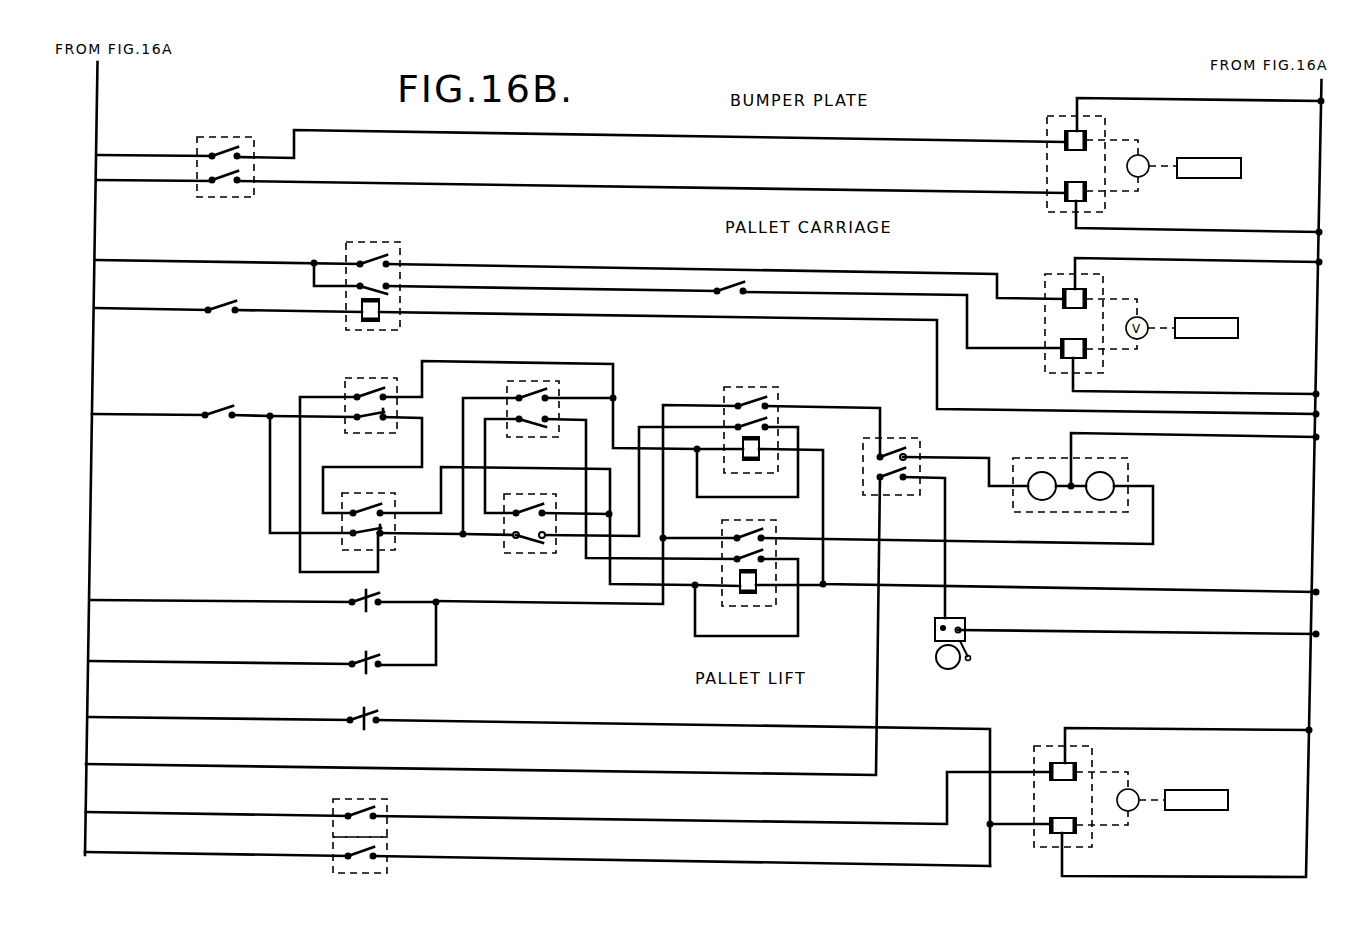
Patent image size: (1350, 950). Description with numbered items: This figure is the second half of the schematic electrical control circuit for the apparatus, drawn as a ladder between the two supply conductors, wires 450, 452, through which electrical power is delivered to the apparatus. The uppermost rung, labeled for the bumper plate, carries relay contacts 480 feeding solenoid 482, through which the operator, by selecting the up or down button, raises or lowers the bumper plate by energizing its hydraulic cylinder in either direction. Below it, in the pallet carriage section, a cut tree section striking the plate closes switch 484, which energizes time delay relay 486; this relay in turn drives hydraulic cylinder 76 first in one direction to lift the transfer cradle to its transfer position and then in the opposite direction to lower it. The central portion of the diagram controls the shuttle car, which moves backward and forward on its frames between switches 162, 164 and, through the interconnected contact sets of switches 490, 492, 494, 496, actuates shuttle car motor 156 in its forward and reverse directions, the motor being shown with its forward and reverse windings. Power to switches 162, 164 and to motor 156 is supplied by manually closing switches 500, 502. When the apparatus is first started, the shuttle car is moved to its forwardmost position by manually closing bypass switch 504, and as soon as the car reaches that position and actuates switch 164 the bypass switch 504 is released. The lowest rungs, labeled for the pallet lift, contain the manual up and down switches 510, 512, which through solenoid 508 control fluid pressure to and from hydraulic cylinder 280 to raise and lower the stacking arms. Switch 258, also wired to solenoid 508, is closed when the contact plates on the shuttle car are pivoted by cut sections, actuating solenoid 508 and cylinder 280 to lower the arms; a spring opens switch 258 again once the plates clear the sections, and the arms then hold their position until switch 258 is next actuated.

The wire 450 is at (97, 108).
The wire 452 is at (1318, 197).
The bumper plate relay contacts 480 is at (230, 137).
The solenoid 482 is at (1047, 124).
The hydraulic cylinder 76 is at (1207, 162).
The switch 484 is at (228, 306).
The time delay relay 486 is at (371, 242).
The switch 162 is at (371, 378).
The switch 164 is at (371, 493).
The switch 490 is at (507, 384).
The switch 492 is at (529, 553).
The switch 494 is at (751, 387).
The switch 496 is at (757, 606).
The switch 500 is at (226, 408).
The switch 502 is at (265, 627).
The bypass switch 504 is at (235, 673).
The switch 258 is at (539, 787).
The up switch 510 is at (333, 800).
The down switch 512 is at (333, 873).
The solenoid 508 is at (1047, 746).
The hydraulic cylinder 280 is at (1196, 794).
The shuttle car motor 156 is at (1128, 470).